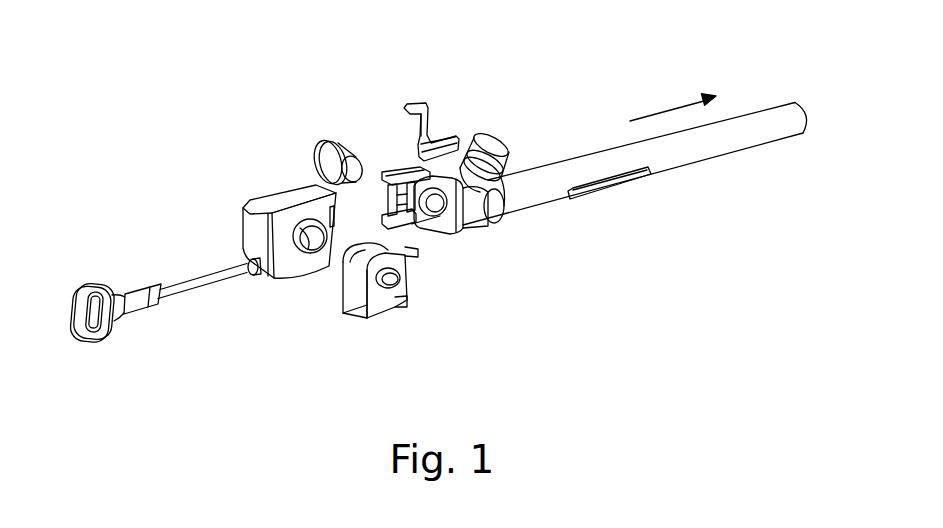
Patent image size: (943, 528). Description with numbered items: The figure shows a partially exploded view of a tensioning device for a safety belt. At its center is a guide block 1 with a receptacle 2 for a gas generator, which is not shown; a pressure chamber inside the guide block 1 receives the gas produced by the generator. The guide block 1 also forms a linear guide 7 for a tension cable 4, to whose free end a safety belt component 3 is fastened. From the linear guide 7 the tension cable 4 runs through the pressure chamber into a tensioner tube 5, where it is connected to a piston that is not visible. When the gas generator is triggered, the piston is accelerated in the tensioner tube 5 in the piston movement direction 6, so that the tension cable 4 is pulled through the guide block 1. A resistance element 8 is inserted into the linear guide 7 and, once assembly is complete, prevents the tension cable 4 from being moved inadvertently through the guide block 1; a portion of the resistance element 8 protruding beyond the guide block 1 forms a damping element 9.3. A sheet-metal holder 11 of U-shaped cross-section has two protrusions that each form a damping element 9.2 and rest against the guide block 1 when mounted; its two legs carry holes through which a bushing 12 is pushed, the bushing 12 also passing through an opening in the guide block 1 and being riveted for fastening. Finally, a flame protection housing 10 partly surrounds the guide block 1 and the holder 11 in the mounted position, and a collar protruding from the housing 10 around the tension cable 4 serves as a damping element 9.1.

The guide block 1 is at (482, 215).
The receptacle 2 is at (497, 147).
The safety belt component 3 is at (88, 284).
The tension cable 4 is at (170, 300).
The tensioner tube 5 is at (685, 160).
The piston movement direction 6 is at (675, 105).
The linear guide 7 is at (420, 227).
The resistance element 8 is at (413, 104).
The damping element 9.1 is at (252, 275).
The damping element 9.2 is at (402, 305).
The damping element 9.3 is at (418, 153).
The housing 10 is at (262, 205).
The holder 11 is at (363, 320).
The bushing 12 is at (328, 142).